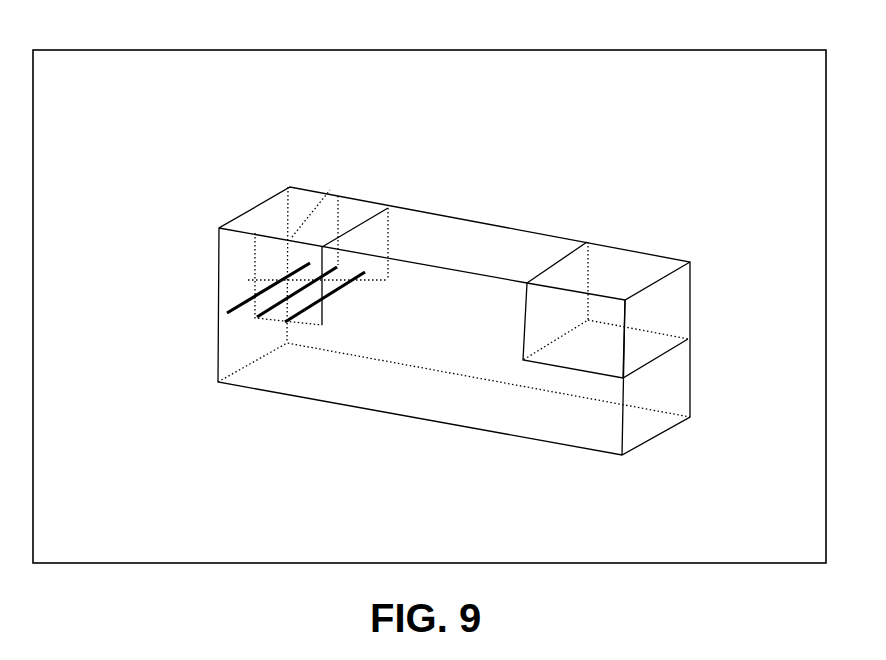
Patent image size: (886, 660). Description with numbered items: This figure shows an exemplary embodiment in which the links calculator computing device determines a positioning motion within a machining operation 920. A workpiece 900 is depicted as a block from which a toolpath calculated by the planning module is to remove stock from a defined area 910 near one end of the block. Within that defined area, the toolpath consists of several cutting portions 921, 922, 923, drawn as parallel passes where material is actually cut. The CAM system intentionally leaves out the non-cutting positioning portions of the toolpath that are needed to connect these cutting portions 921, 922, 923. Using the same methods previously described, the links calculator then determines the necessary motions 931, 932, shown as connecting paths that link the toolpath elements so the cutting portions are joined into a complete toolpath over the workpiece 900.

The workpiece 900 is at (350, 408).
The defined area 910 is at (345, 298).
The machining operation 920 is at (224, 250).
The cutting portion 921 is at (245, 300).
The cutting portion 922 is at (255, 268).
The cutting portion 923 is at (255, 230).
The motion 931 is at (388, 207).
The motion 932 is at (338, 193).